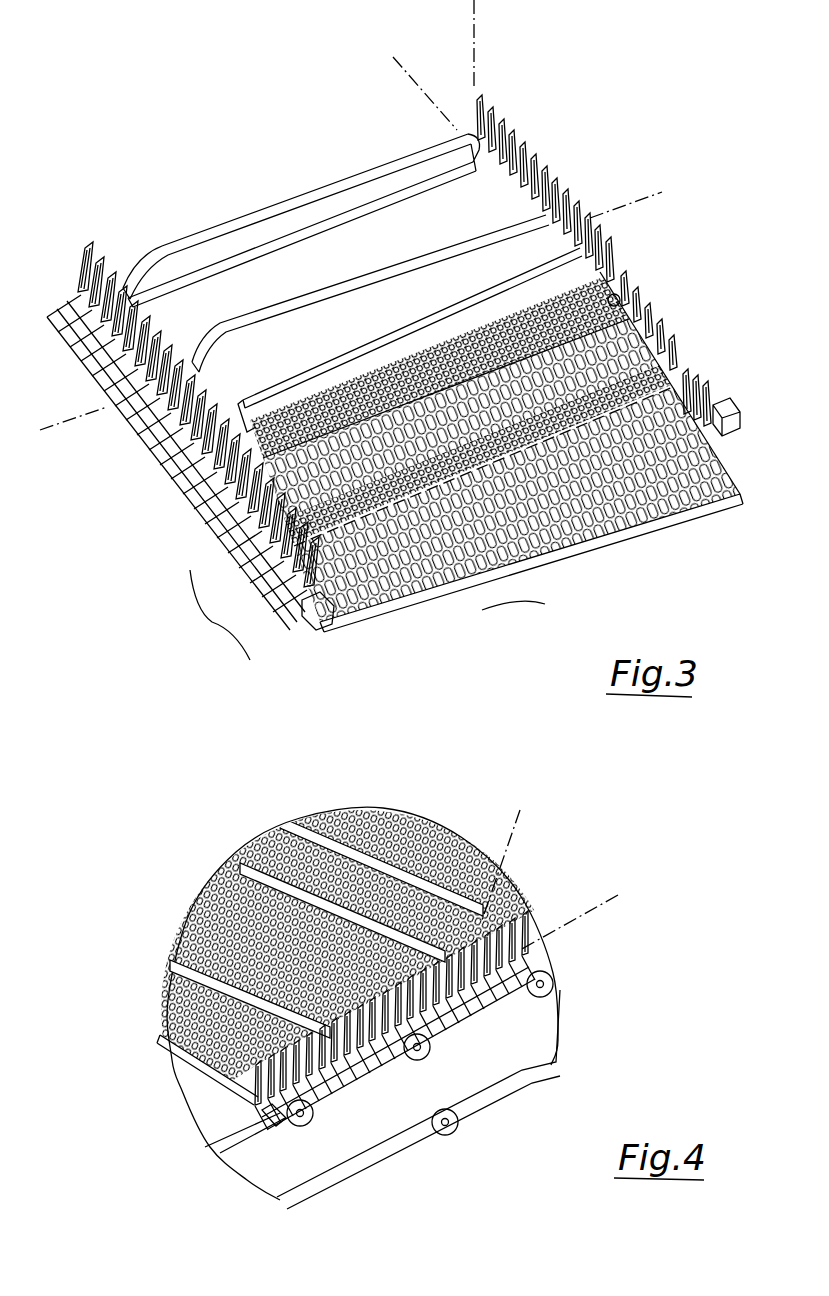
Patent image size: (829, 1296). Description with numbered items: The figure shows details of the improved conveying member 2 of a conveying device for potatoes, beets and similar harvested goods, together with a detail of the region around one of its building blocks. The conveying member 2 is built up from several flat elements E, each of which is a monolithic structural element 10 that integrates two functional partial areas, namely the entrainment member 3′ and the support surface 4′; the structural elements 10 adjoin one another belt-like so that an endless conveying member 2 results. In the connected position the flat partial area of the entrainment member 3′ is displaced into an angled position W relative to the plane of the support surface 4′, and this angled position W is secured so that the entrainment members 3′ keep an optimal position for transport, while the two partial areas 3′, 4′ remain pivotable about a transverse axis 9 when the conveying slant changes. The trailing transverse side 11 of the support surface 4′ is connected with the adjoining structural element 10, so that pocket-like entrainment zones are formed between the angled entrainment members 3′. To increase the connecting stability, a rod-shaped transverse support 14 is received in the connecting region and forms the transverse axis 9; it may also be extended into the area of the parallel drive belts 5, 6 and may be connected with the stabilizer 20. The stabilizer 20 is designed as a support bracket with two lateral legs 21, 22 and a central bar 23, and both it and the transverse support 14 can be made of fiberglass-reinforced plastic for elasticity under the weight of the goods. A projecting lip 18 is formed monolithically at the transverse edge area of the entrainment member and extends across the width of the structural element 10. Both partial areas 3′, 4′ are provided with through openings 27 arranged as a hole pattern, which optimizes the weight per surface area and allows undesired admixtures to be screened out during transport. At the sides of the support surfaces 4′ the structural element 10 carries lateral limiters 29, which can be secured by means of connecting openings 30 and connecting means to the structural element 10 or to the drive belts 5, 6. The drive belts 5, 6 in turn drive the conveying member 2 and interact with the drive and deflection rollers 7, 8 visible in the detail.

In FIG. 3, the conveying member 2 is at (180, 129).
In FIG. 4, the conveying member 2 is at (172, 846).
In FIG. 3, the entrainment member 3′ is at (273, 577).
In FIG. 4, the entrainment member 3′ is at (170, 1033).
In FIG. 3, the support surface 4′ is at (640, 495).
In FIG. 4, the support surface 4′ is at (321, 872).
In FIG. 3, the drive belt 5 is at (124, 409).
In FIG. 3, the drive belt 6 is at (720, 402).
In FIG. 4, the drive belt 6 is at (273, 1128).
In FIG. 3, the drive and deflection roller 7 is at (616, 298).
In FIG. 4, the drive and deflection roller 7 is at (553, 980).
In FIG. 4, the drive and deflection roller 8 is at (457, 1128).
In FIG. 3, the transverse axis 9 is at (627, 198).
In FIG. 3, the structural element 10 is at (334, 624).
In FIG. 4, the structural element 10 is at (235, 864).
In FIG. 3, the trailing transverse side 11 is at (607, 572).
In FIG. 3, the transverse support 14 is at (327, 236).
In FIG. 3, the lip 18 is at (298, 420).
In FIG. 4, the lip 18 is at (419, 868).
In FIG. 3, the stabilizer 20 is at (306, 184).
In FIG. 3, the lateral leg 21 is at (458, 150).
In FIG. 3, the lateral leg 22 is at (135, 272).
In FIG. 3, the central bar 23 is at (238, 222).
In FIG. 3, the through openings 27 is at (463, 340).
In FIG. 3, the lateral limiter 29 is at (72, 253).
In FIG. 4, the lateral limiter 29 is at (522, 926).
In FIG. 3, the connecting opening 30 is at (316, 596).
In FIG. 3, the angled position W is at (470, 6).
In FIG. 4, the angled position W is at (574, 906).
In FIG. 3, the flat element E is at (212, 622).